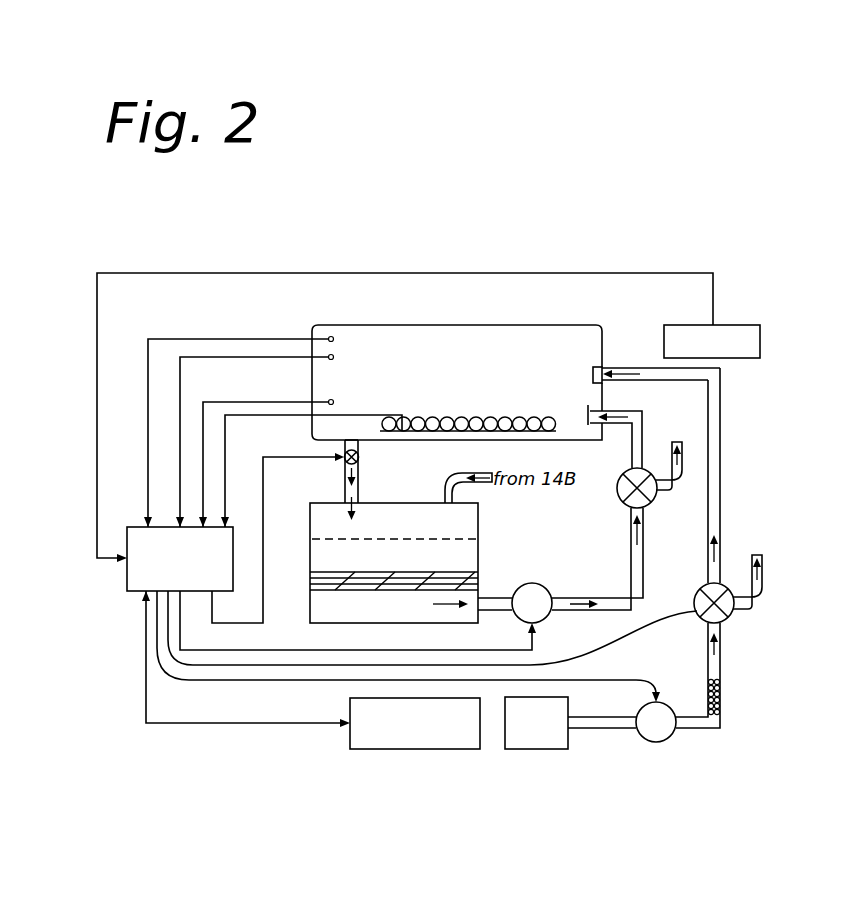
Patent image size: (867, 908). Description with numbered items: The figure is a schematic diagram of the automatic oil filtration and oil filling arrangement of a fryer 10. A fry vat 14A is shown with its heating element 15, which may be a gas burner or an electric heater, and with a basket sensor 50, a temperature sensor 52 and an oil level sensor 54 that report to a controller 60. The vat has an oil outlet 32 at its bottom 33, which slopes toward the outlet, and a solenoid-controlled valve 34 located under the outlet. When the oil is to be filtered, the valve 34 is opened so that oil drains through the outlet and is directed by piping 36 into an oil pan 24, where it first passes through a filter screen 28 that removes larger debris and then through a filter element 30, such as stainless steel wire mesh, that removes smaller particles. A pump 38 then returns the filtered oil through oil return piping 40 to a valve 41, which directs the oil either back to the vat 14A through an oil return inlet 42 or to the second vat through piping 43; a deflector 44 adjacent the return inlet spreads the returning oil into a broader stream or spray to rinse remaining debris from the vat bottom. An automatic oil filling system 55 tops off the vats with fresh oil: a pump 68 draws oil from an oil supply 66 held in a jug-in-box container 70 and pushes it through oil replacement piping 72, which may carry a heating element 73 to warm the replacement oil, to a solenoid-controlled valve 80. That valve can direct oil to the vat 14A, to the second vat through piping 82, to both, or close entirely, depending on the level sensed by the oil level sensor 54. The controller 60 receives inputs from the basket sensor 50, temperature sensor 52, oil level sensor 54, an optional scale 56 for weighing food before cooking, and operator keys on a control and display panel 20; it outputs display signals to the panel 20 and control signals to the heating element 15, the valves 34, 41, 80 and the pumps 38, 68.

The fryer 10 is at (278, 214).
The fry vat 14A is at (496, 411).
The heating element 15 is at (523, 431).
The control and display panel 20 is at (432, 749).
The oil pan 24 is at (379, 618).
The filter screen 28 is at (452, 539).
The filter element 30 is at (478, 583).
The oil outlet 32 is at (362, 438).
The bottom 33 is at (432, 440).
The solenoid-controlled valve 34 is at (360, 461).
The piping 36 is at (345, 482).
The pump 38 is at (546, 618).
The oil return piping 40 is at (643, 517).
The valve 41 is at (652, 500).
The oil return inlet 42 is at (601, 413).
The piping 43 is at (683, 468).
The deflector 44 is at (590, 428).
The basket sensor 50 is at (331, 338).
The temperature sensor 52 is at (331, 402).
The oil level sensor 54 is at (331, 357).
The automatic oil filling system 55 is at (676, 688).
The scale 56 is at (726, 358).
The controller 60 is at (189, 573).
The oil supply 66 is at (519, 772).
The pump 68 is at (668, 735).
The jug-in-box container 70 is at (555, 743).
The oil replacement piping 72 is at (720, 480).
The heating element 73 is at (727, 709).
The solenoid-controlled valve 80 is at (730, 618).
The piping 82 is at (764, 590).